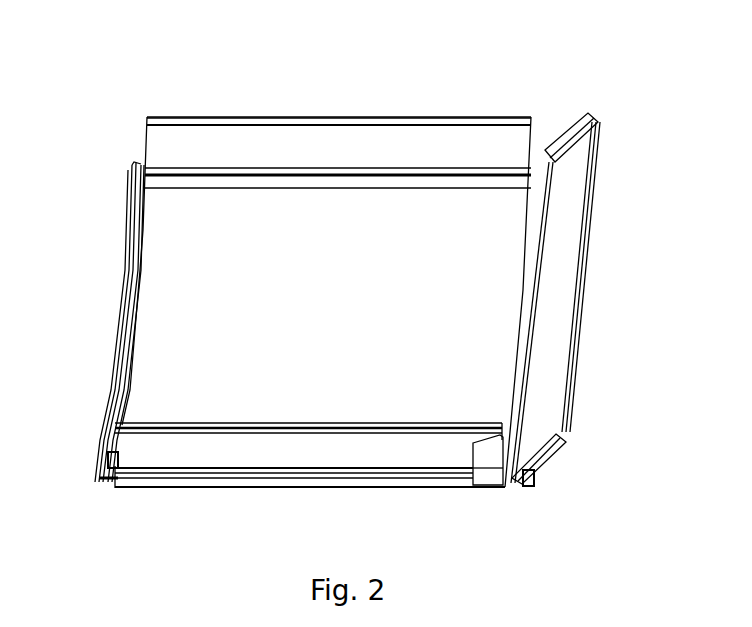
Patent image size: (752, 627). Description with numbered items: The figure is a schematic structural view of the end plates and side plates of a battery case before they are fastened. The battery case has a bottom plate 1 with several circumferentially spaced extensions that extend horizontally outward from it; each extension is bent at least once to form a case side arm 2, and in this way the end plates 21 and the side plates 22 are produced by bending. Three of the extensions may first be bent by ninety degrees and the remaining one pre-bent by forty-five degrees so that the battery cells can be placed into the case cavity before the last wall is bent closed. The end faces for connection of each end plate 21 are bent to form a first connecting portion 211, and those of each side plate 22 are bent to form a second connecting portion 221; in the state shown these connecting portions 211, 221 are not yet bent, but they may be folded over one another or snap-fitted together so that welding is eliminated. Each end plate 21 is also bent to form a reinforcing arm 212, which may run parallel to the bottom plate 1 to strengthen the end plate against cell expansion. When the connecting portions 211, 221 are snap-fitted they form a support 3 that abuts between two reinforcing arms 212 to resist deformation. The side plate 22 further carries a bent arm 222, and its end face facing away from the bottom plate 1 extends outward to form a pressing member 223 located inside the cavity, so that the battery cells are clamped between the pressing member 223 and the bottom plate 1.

The bottom plate 1 is at (233, 242).
The case side arm 2 is at (645, 62).
The end plate 21 is at (495, 142).
The side plate 22 is at (567, 193).
The second connecting portion 221 is at (535, 440).
The bent arm 222 is at (540, 478).
The pressing member 223 is at (590, 275).
The first connecting portion 211 is at (480, 480).
The reinforcing arm 212 is at (143, 440).
The support 3 is at (107, 478).